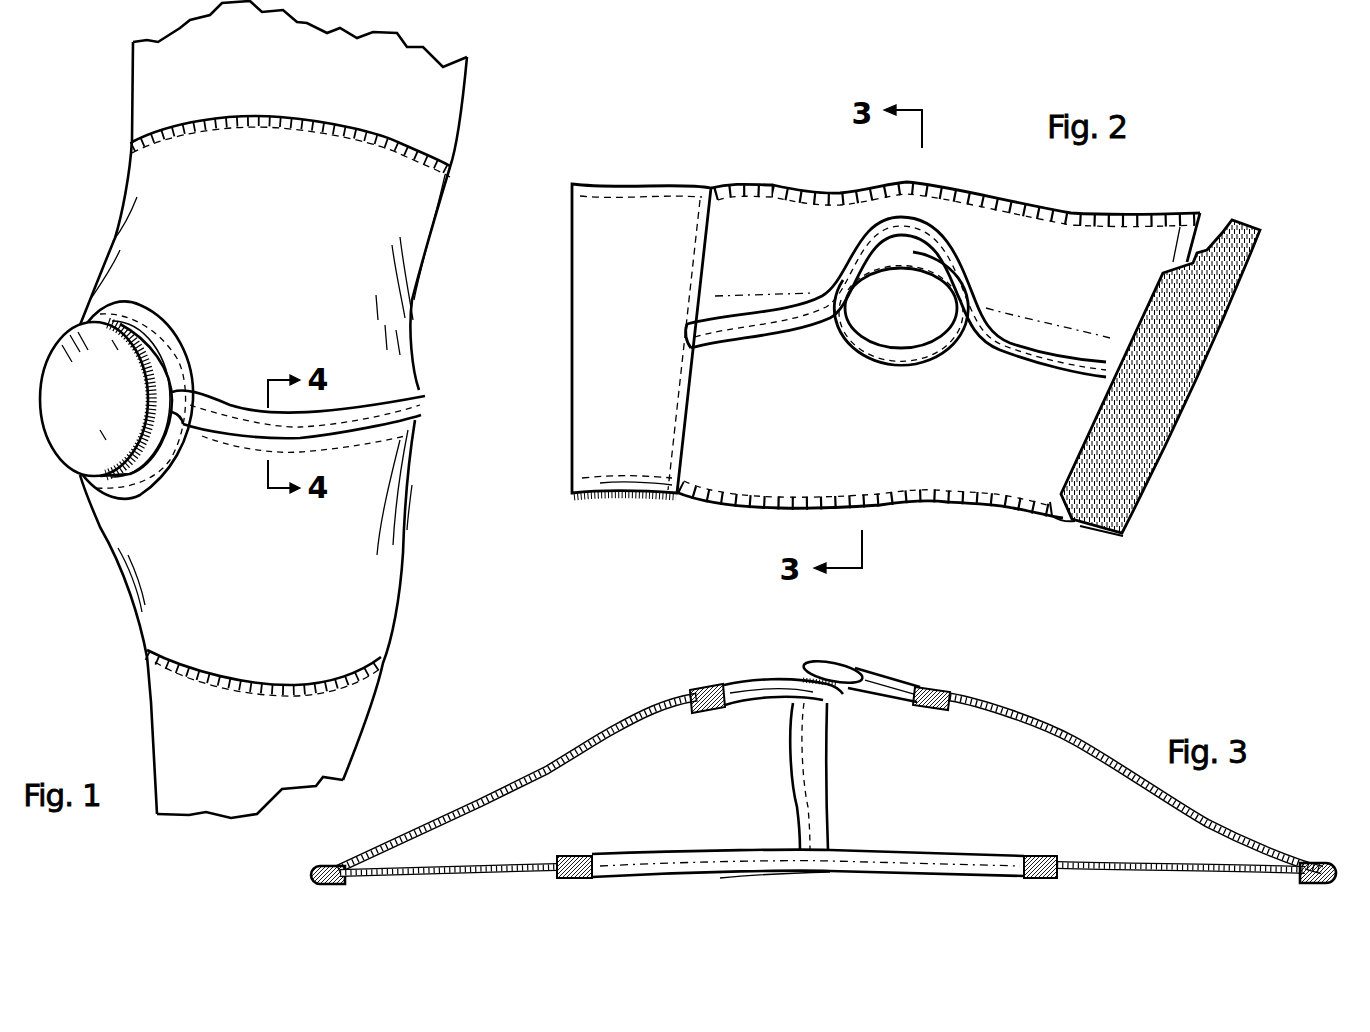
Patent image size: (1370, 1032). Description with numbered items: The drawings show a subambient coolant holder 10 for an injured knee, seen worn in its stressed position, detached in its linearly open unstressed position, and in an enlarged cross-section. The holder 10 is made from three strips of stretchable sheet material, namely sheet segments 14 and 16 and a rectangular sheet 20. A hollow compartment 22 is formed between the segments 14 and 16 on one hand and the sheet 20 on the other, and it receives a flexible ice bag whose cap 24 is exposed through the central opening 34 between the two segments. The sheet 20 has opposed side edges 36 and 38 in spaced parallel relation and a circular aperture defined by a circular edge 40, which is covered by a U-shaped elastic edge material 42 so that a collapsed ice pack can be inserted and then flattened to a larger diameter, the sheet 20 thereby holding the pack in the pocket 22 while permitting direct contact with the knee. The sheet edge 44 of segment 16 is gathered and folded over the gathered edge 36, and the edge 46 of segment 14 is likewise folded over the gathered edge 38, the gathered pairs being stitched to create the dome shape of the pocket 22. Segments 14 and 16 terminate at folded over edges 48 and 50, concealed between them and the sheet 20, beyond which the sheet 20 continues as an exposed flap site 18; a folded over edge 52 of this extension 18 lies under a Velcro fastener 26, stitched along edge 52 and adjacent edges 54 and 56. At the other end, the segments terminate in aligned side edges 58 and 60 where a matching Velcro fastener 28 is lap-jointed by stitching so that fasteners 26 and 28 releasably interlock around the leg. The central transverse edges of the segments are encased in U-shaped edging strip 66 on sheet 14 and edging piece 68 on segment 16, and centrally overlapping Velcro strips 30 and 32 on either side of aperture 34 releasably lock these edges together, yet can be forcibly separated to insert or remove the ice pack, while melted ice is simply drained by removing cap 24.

In FIG. 1, the holder 10 is at (441, 274).
In FIG. 2, the holder 10 is at (775, 182).
In FIG. 3, the holder 10 is at (1039, 706).
In FIG. 1, the sheet segment 14 is at (284, 570).
In FIG. 2, the sheet segment 14 is at (1032, 278).
In FIG. 3, the sheet segment 14 is at (1090, 740).
In FIG. 1, the sheet segment 16 is at (302, 298).
In FIG. 2, the sheet segment 16 is at (969, 427).
In FIG. 3, the sheet segment 16 is at (487, 796).
In FIG. 2, the flap site 18 is at (612, 347).
In FIG. 3, the sheet 20 is at (478, 867).
In FIG. 3, the compartment 22 is at (741, 870).
In FIG. 1, the cap 24 is at (81, 407).
In FIG. 2, the Velcro fastener 26 is at (625, 502).
In FIG. 2, the Velcro fastener 28 is at (1104, 534).
In FIG. 3, the Velcro strips 30 is at (836, 667).
In FIG. 3, the Velcro strips 32 is at (790, 676).
In FIG. 1, the central opening 34 is at (160, 362).
In FIG. 2, the central opening 34 is at (925, 228).
In FIG. 3, the central opening 34 is at (701, 689).
In FIG. 3, the side edge 36 is at (308, 873).
In FIG. 3, the side edge 38 is at (1328, 865).
In FIG. 3, the circular edge 40 is at (590, 857).
In FIG. 3, the edge material 42 is at (977, 853).
In FIG. 1, the sheet edge 44 is at (190, 115).
In FIG. 2, the sheet edge 44 is at (986, 506).
In FIG. 3, the sheet edge 44 is at (318, 885).
In FIG. 1, the edge 46 is at (227, 690).
In FIG. 2, the edge 46 is at (1150, 212).
In FIG. 3, the edge 46 is at (1316, 886).
In FIG. 2, the folded over edge 48 is at (707, 263).
In FIG. 2, the folded over edge 50 is at (684, 428).
In FIG. 2, the folded over edge 52 is at (568, 296).
In FIG. 2, the edge 54 is at (640, 183).
In FIG. 2, the edge 56 is at (573, 495).
In FIG. 2, the side edge 58 is at (1208, 238).
In FIG. 2, the side edge 60 is at (1072, 523).
In FIG. 1, the edging strip 66 is at (335, 412).
In FIG. 2, the edging strip 66 is at (960, 263).
In FIG. 3, the edging strip 66 is at (881, 673).
In FIG. 1, the edging piece 68 is at (152, 330).
In FIG. 2, the edging piece 68 is at (862, 307).
In FIG. 3, the edging piece 68 is at (740, 705).